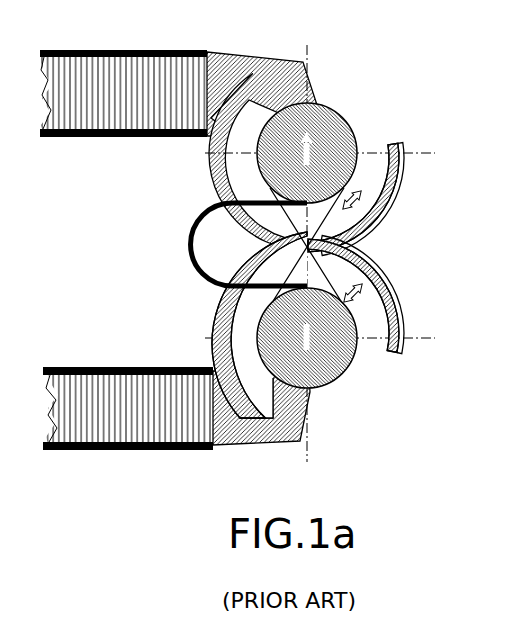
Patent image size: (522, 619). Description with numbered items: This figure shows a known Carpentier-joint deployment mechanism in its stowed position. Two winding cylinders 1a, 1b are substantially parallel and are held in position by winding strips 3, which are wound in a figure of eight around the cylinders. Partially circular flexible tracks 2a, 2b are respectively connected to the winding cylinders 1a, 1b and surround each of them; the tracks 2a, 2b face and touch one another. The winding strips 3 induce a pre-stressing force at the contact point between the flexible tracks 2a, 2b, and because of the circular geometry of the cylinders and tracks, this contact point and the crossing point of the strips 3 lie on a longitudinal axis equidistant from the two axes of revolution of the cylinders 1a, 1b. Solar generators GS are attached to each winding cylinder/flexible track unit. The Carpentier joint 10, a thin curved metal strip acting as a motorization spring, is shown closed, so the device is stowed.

The winding cylinder 1a is at (348, 354).
The winding cylinder 1b is at (347, 121).
The flexible track 2a is at (398, 313).
The flexible track 2b is at (403, 178).
The winding strips 3 is at (330, 277).
The Carpentier joint 10 is at (190, 244).
The solar generators GS is at (152, 52).